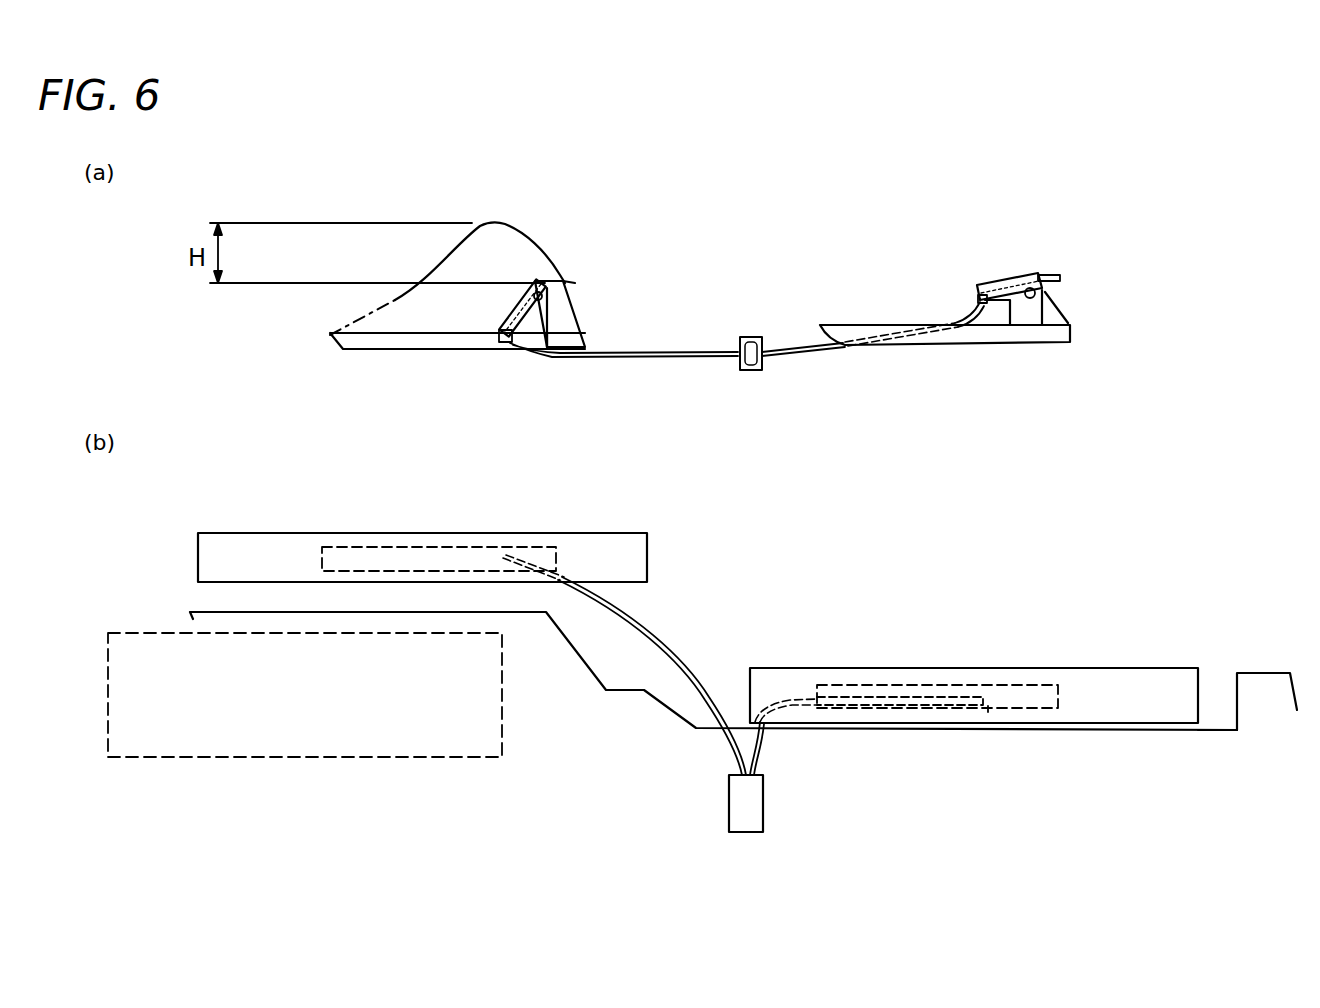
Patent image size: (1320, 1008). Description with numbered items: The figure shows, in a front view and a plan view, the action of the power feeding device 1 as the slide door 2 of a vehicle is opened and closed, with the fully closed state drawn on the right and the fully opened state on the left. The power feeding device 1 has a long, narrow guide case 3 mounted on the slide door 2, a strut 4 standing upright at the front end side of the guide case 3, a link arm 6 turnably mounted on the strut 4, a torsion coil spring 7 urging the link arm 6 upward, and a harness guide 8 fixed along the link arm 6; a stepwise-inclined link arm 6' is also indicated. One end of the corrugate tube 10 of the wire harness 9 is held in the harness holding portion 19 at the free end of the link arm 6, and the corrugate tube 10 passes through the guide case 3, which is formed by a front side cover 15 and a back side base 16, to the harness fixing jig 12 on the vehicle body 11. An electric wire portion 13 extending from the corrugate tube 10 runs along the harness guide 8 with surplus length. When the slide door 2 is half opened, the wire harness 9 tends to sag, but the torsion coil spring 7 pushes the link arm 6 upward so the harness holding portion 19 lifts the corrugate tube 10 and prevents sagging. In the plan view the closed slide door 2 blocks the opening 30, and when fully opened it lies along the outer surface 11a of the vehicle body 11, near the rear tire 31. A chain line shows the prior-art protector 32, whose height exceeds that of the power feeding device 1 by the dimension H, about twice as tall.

The power feeding device 1 is at (838, 440).
The slide door 2 is at (580, 533).
The guide case 3 is at (445, 352).
The strut 4 is at (563, 317).
The link arm 6 is at (1026, 353).
The link arm 6' is at (559, 376).
The torsion coil spring 7 is at (570, 285).
The harness guide 8 is at (505, 325).
The wire harness 9 is at (715, 362).
The corrugate tube 10 is at (640, 360).
The vehicle body 11 is at (1263, 673).
The outer surface 11a is at (447, 612).
The harness fixing jig 12 is at (752, 373).
The electric wire portion 13 is at (560, 280).
The front side cover 15 is at (988, 710).
The back side base 16 is at (987, 683).
The harness holding portion 19 is at (503, 350).
The opening 30 is at (1218, 715).
The rear tire 31 is at (383, 760).
The protector 32 is at (538, 242).